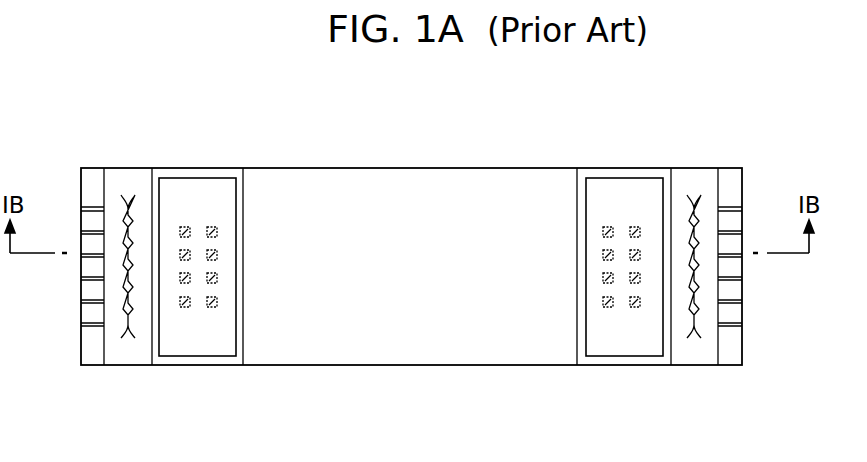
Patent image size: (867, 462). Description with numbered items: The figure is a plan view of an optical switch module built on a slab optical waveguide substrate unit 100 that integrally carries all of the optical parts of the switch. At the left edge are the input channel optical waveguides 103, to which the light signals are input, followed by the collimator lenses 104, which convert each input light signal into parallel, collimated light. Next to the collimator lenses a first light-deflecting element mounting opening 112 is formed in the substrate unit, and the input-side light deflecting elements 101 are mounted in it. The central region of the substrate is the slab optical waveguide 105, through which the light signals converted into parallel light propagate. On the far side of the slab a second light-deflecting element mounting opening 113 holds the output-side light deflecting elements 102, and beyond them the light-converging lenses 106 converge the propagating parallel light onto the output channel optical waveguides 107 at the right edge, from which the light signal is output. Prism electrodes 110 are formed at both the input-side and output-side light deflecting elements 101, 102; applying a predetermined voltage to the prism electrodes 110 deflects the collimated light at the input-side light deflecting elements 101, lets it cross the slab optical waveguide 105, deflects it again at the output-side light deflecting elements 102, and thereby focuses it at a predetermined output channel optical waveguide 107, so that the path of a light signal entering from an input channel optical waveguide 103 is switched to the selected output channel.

The slab optical waveguide substrate unit 100 is at (389, 161).
The input-side light deflecting elements 101 is at (205, 188).
The output-side light deflecting elements 102 is at (622, 188).
The input channel optical waveguides 103 is at (92, 232).
The collimator lenses 104 is at (128, 297).
The slab optical waveguide 105 is at (347, 352).
The light-converging lenses 106 is at (695, 297).
The output channel optical waveguides 107 is at (730, 302).
The prism electrodes 110 is at (208, 307).
The first light-deflecting element mounting opening 112 is at (158, 172).
The second light-deflecting element mounting opening 113 is at (585, 173).